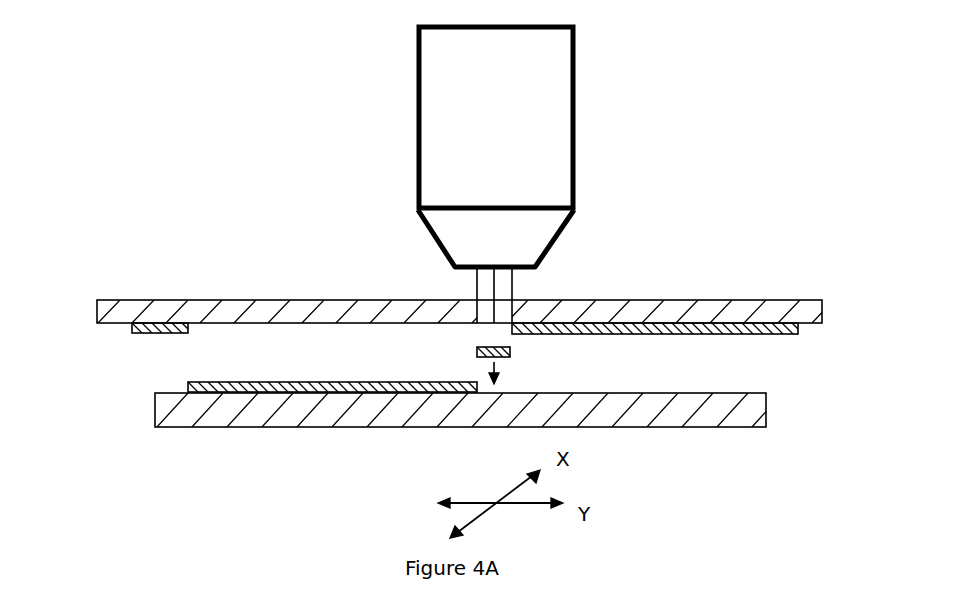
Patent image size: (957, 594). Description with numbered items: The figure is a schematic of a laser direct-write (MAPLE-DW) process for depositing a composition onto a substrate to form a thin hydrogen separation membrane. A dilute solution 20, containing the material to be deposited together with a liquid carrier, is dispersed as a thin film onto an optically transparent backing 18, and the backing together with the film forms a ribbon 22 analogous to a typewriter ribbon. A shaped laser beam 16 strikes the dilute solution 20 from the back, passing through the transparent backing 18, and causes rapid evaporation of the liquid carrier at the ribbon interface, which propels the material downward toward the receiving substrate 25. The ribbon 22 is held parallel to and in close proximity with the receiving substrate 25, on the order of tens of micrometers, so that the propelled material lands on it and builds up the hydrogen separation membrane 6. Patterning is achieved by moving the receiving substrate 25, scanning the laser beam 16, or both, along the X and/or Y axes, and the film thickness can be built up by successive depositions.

The shaped laser beam 16 is at (512, 275).
The optically transparent backing 18 is at (328, 300).
The ribbon 22 is at (90, 300).
The dilute solution 20 is at (780, 334).
The hydrogen separation membrane 6 is at (187, 382).
The receiving substrate 25 is at (266, 428).